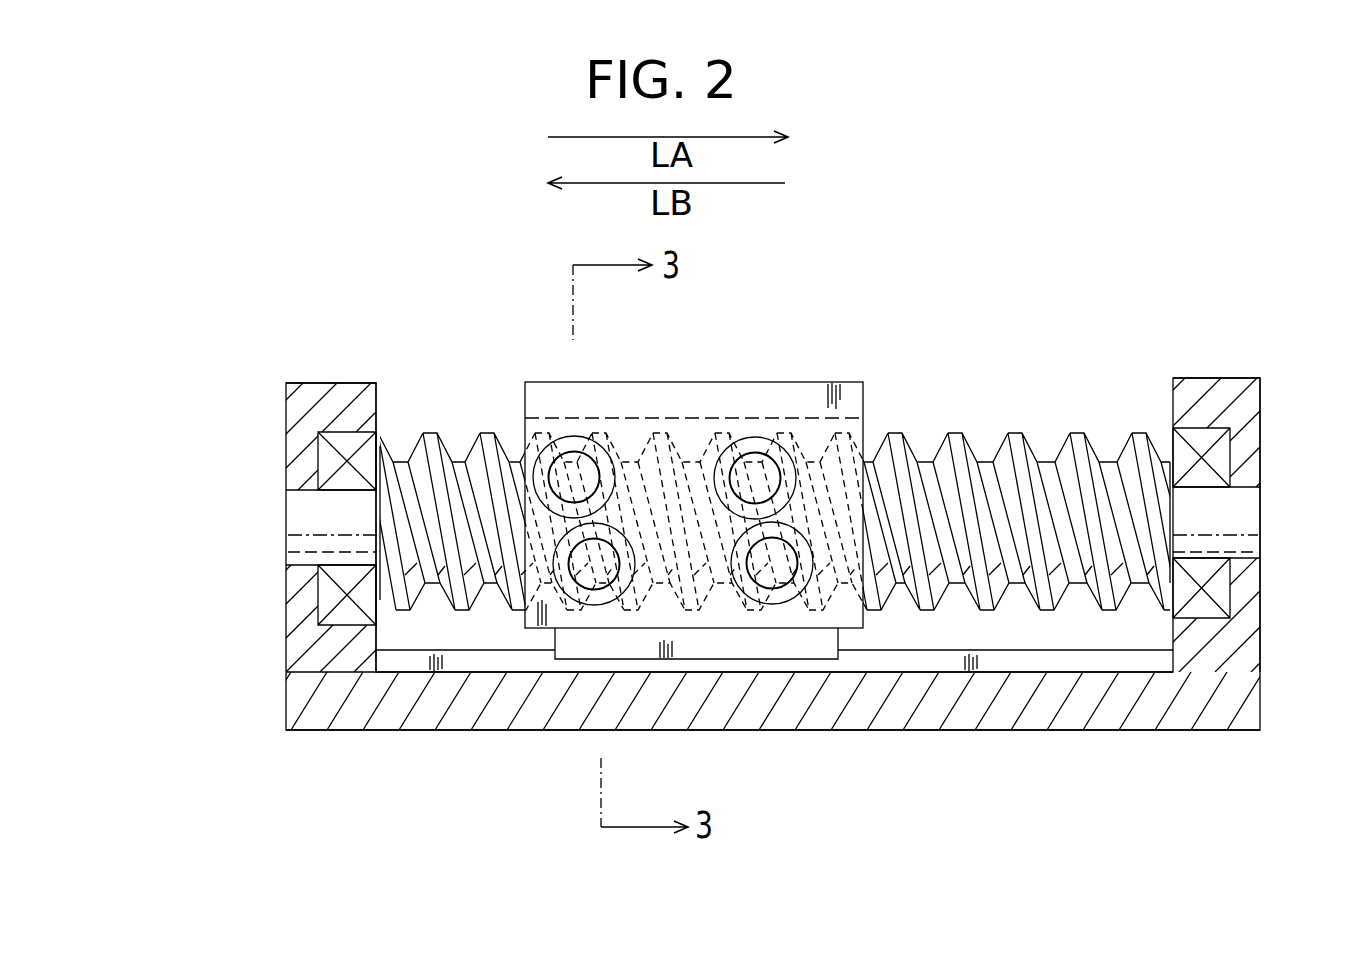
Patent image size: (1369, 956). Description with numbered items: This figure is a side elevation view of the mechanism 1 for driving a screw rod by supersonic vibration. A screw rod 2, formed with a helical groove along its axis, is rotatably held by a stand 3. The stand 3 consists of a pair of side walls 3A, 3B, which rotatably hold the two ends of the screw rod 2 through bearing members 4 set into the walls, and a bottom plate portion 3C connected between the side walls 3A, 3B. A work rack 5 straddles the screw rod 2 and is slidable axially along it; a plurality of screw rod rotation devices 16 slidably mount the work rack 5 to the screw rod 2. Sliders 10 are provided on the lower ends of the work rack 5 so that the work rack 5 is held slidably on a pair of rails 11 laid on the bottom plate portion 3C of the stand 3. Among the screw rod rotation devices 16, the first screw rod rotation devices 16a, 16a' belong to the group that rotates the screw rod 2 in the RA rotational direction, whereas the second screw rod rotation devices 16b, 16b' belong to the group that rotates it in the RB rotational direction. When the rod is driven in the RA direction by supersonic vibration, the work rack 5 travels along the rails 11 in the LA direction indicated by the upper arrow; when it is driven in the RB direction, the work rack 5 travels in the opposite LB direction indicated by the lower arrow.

The feed screw device 1 is at (956, 393).
The screw rod 2 is at (427, 440).
The stand 3 is at (684, 508).
The side wall 3A is at (295, 417).
The side wall 3B is at (1237, 393).
The bottom plate portion 3C is at (435, 702).
The bearings 4 is at (327, 592).
The work rack 5 is at (810, 390).
The sliders 10 is at (813, 640).
The rails 11 is at (1027, 660).
The screw rod rotation devices 16 is at (672, 538).
The first screw rod rotation device 16a is at (755, 403).
The first screw rod rotation device 16a' is at (548, 405).
The second screw rod rotation device 16b is at (791, 653).
The second screw rod rotation device 16b' is at (559, 656).